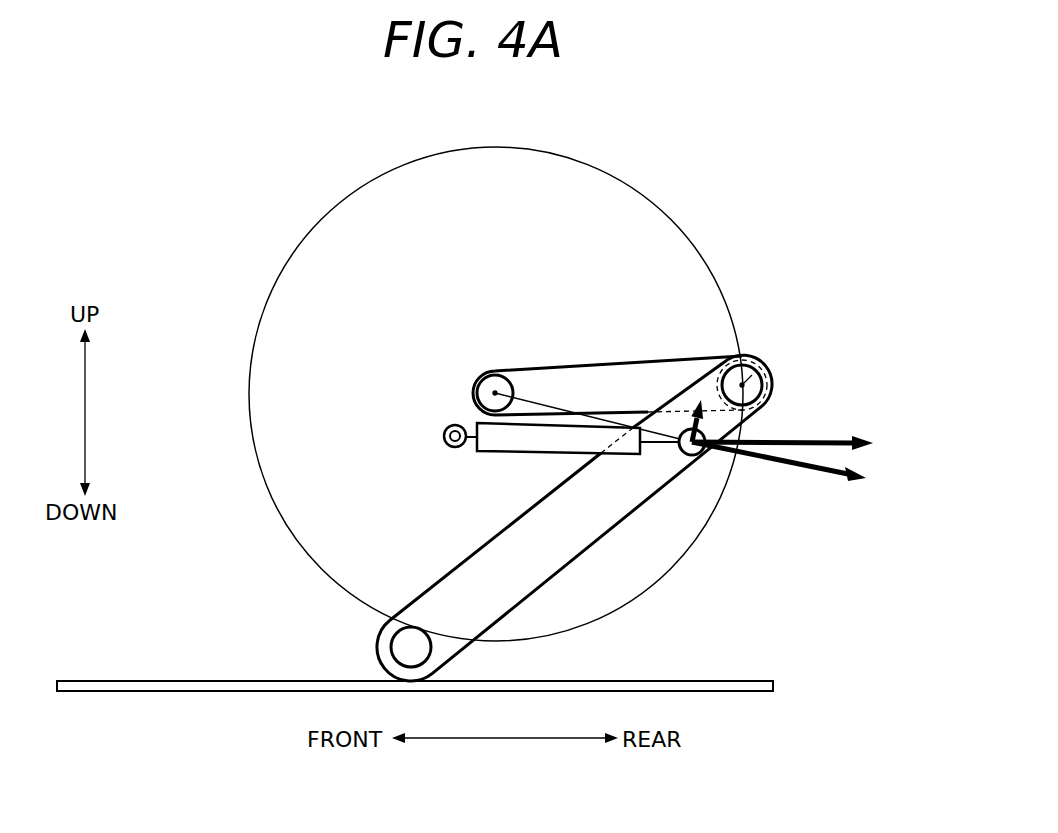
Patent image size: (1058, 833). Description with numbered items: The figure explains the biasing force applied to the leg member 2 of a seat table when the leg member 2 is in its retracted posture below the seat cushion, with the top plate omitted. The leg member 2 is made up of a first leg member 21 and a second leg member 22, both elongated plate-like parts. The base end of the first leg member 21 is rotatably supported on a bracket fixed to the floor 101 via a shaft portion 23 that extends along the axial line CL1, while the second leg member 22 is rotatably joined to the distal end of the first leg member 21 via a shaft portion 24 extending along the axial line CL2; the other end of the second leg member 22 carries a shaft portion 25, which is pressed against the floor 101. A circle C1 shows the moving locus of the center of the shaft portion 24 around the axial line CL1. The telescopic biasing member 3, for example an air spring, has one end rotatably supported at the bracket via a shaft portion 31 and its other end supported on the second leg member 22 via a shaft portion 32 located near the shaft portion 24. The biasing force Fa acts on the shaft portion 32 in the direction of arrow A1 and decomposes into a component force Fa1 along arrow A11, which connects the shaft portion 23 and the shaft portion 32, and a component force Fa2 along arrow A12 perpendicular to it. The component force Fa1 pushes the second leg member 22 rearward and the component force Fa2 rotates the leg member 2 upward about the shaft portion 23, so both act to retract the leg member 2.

The leg member 2 is at (563, 486).
The first leg member 21 is at (609, 368).
The second leg member 22 is at (576, 562).
The shaft portion 23 is at (481, 389).
The shaft portion 24 is at (746, 358).
The shaft portion 25 is at (380, 650).
The biasing member 3 is at (523, 456).
The shaft portion 31 is at (446, 429).
The shaft portion 32 is at (690, 456).
The floor 101 is at (737, 680).
The circle C1 is at (686, 238).
The axial line CL1 is at (497, 392).
The axial line CL2 is at (746, 382).
The arrow A1 is at (790, 429).
The arrow A11 is at (771, 486).
The arrow A12 is at (682, 434).
The biasing force Fa is at (797, 445).
The component force Fa1 is at (800, 470).
The component force Fa2 is at (705, 412).